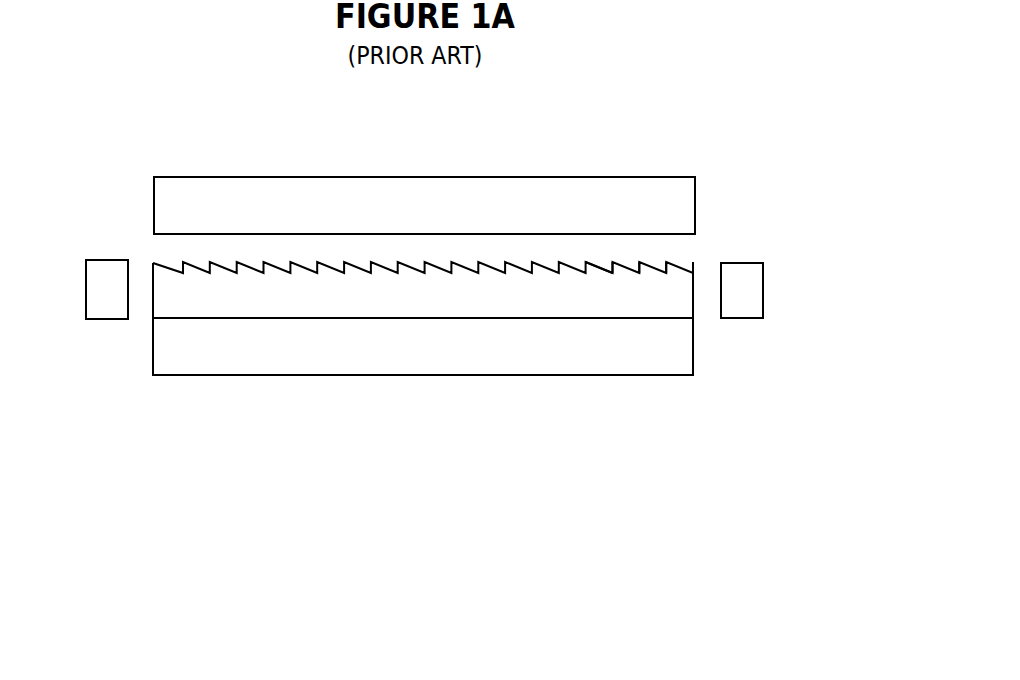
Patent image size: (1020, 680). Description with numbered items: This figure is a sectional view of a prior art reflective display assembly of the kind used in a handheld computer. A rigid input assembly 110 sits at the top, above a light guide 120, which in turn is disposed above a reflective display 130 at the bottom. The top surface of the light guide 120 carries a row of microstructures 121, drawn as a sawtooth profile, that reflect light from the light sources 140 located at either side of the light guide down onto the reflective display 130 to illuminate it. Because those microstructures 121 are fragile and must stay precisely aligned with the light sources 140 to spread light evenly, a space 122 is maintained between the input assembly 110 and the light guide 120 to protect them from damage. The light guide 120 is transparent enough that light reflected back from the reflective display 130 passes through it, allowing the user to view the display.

The input assembly 110 is at (238, 196).
The light guide 120 is at (214, 282).
The microstructures 121 is at (639, 277).
The space 122 is at (610, 245).
The reflective display 130 is at (596, 356).
The light sources 140 is at (97, 318).